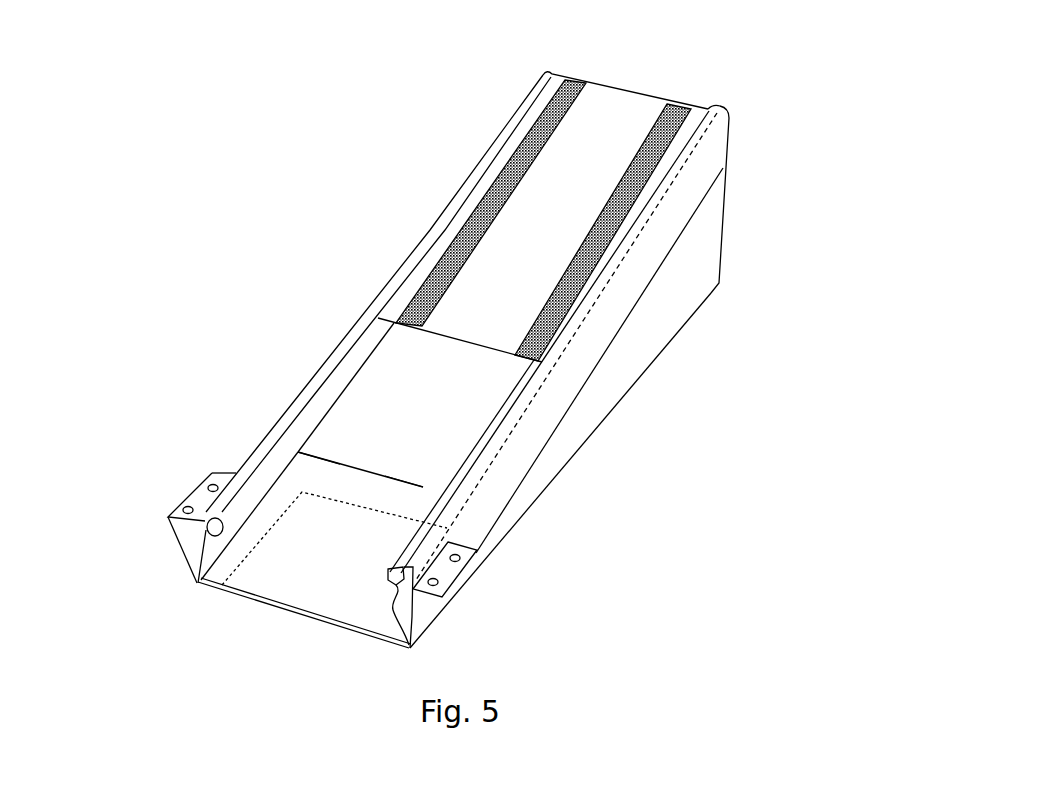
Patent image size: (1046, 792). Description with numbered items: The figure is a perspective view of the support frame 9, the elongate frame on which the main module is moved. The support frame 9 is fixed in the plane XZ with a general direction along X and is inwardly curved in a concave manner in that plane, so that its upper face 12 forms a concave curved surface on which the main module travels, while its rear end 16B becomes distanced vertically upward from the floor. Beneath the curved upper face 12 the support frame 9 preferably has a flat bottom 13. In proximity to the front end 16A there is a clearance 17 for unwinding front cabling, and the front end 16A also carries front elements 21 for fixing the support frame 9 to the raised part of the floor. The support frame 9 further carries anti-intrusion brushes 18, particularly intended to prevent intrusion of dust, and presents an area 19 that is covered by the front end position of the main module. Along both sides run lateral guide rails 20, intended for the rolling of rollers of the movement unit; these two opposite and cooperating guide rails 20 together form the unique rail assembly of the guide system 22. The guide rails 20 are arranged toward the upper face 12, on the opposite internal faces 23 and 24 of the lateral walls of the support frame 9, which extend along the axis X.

The support frame 9 is at (230, 202).
The upper face 12 is at (486, 198).
The flat bottom 13 is at (612, 420).
The front end 16A is at (166, 563).
The rear end 16B is at (739, 120).
The clearance 17 is at (306, 572).
The anti-intrusion brushes 18 is at (580, 84).
The area 19 is at (384, 402).
The lateral guide rails 20 is at (362, 343).
The front elements 21 is at (186, 493).
The guide system 22 is at (199, 545).
The internal face 23 is at (291, 438).
The internal face 24 is at (438, 497).